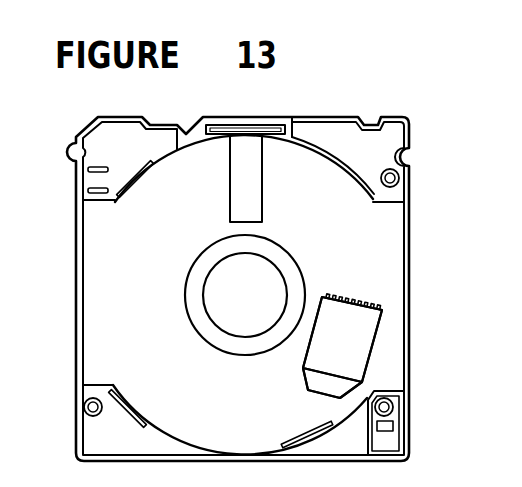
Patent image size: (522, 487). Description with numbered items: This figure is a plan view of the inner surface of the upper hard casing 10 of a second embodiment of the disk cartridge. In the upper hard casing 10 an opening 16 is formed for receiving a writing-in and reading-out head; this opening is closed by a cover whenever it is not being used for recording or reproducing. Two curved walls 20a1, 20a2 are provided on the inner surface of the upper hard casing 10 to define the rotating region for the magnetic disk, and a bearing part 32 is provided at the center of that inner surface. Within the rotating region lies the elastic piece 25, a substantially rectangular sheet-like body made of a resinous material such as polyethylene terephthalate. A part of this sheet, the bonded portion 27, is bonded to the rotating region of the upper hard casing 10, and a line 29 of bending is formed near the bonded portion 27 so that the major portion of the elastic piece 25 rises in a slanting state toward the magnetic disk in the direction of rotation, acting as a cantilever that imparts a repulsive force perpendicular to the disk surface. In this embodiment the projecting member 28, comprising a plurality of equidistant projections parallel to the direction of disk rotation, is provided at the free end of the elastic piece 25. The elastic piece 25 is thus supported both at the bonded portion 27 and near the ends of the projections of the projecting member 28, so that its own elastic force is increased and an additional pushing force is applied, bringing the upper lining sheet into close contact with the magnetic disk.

The upper hard casing 10 is at (409, 276).
The opening for receiving a writing-in and reading-out head 16 is at (252, 198).
The curved wall 20a1 is at (160, 161).
The curved wall 20a2 is at (187, 444).
The bearing part 32 is at (215, 290).
The elastic piece 25 is at (312, 347).
The bonded portion 27 is at (320, 392).
The projecting member 28 is at (332, 290).
The line of bending 29 is at (330, 372).